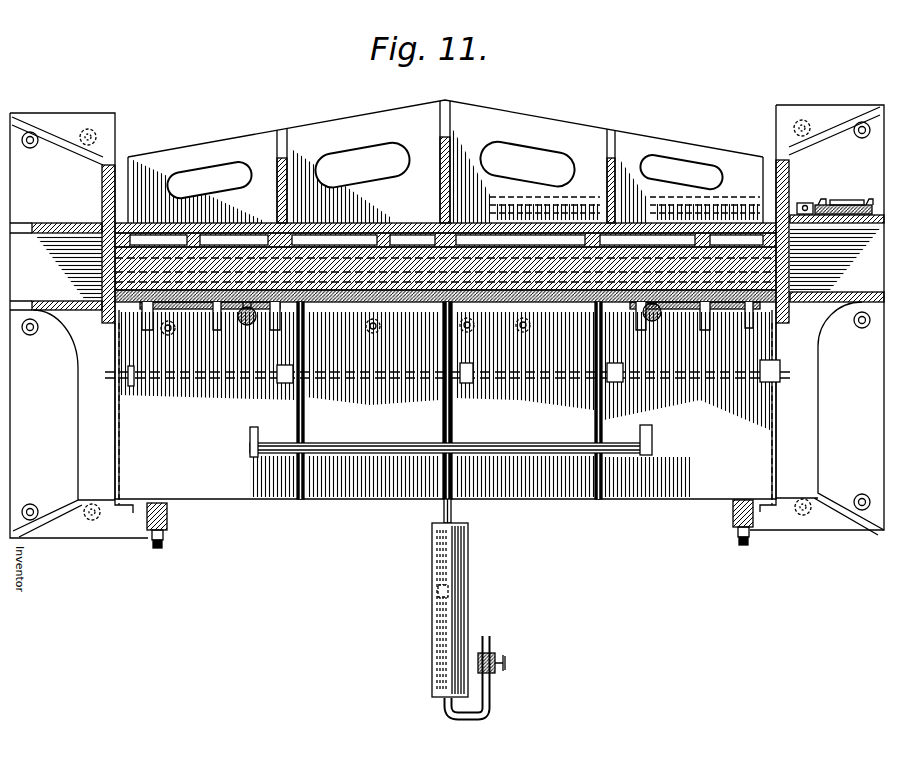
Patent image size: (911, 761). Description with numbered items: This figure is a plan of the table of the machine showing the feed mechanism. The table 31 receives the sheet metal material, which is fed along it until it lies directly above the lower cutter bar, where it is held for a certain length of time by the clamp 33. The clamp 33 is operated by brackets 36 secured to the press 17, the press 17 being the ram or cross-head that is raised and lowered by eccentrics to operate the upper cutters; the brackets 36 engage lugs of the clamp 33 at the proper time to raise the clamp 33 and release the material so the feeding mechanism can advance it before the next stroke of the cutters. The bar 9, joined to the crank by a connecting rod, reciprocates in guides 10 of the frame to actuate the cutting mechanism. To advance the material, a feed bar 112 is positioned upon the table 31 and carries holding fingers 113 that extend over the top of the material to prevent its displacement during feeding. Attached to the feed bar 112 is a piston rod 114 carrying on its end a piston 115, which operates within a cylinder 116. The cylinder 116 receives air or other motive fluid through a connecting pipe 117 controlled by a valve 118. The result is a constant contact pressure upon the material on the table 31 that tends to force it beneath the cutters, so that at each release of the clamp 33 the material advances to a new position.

The bar 9 is at (846, 206).
The guides 10 is at (829, 203).
The press 17 is at (408, 208).
The table 31 is at (450, 400).
The clamp 33 is at (427, 305).
The brackets 36 is at (247, 326).
The feed bar 112 is at (360, 446).
The holding fingers 113 is at (251, 437).
The piston rod 114 is at (454, 513).
The piston 115 is at (437, 590).
The cylinder 116 is at (444, 617).
The connecting pipe 117 is at (490, 688).
The valve 118 is at (492, 660).